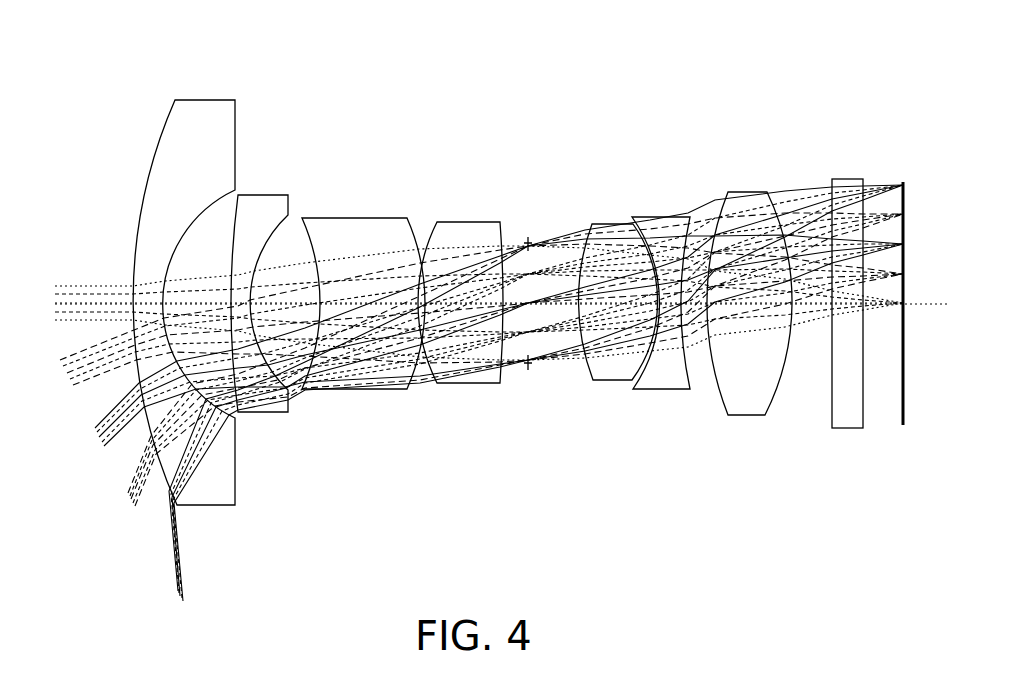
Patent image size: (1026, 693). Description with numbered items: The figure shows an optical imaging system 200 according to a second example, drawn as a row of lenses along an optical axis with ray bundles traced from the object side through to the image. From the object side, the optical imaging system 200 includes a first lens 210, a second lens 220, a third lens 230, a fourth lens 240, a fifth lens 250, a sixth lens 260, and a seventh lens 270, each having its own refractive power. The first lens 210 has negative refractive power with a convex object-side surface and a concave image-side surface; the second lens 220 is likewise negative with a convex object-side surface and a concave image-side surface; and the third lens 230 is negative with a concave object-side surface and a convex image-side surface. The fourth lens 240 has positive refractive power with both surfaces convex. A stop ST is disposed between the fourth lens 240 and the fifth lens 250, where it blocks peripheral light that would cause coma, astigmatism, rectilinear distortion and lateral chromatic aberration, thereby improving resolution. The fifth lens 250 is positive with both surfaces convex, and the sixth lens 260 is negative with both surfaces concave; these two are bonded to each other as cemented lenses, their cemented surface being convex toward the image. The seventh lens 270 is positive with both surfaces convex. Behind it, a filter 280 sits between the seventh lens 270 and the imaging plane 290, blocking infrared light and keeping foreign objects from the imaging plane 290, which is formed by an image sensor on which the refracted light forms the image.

The optical imaging system 200 is at (550, 155).
The first lens 210 is at (214, 506).
The second lens 220 is at (270, 413).
The third lens 230 is at (347, 390).
The fourth lens 240 is at (470, 384).
The stop ST is at (530, 364).
The fifth lens 250 is at (612, 381).
The sixth lens 260 is at (665, 390).
The seventh lens 270 is at (742, 416).
The filter 280 is at (845, 429).
The imaging plane 290 is at (900, 426).